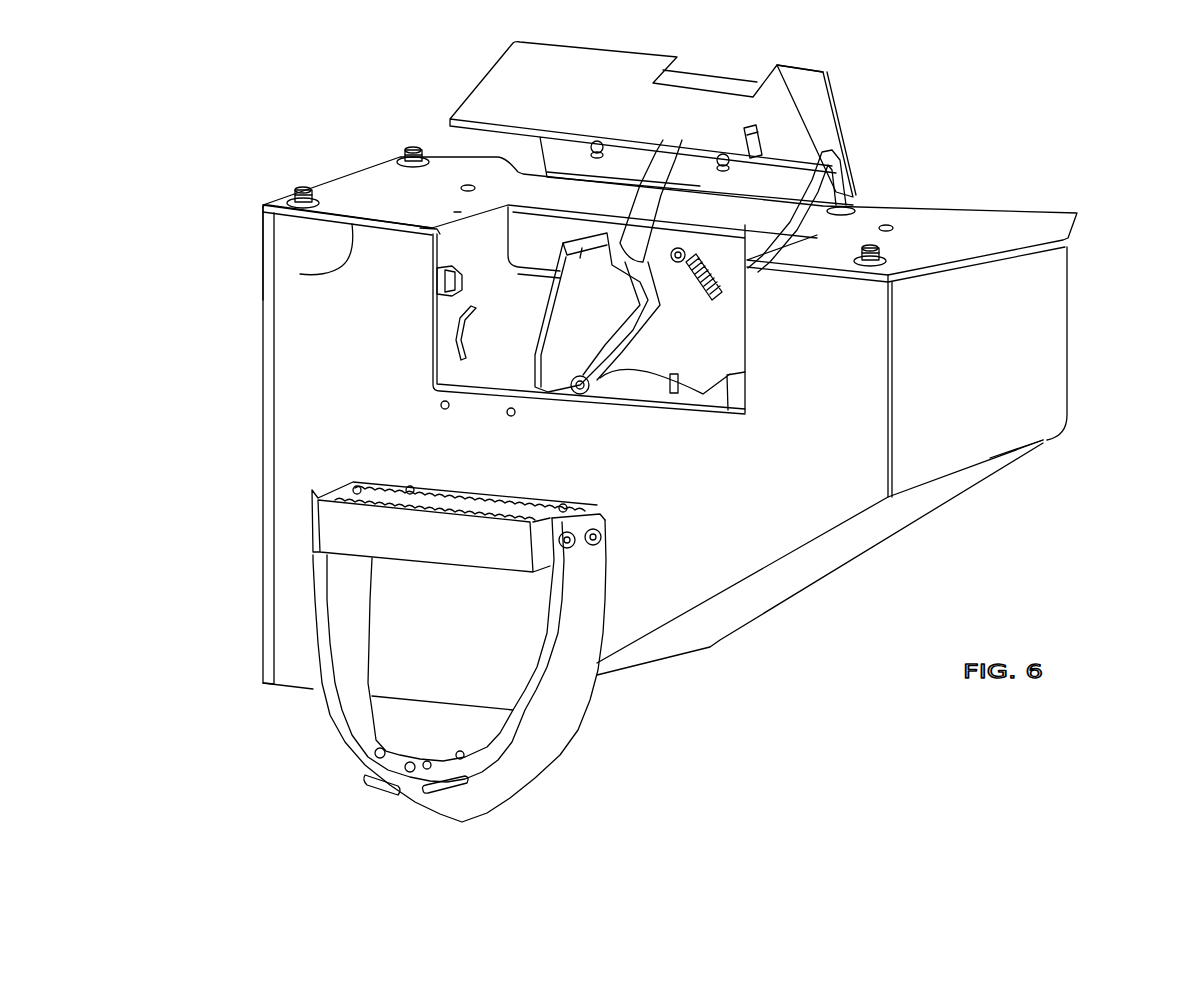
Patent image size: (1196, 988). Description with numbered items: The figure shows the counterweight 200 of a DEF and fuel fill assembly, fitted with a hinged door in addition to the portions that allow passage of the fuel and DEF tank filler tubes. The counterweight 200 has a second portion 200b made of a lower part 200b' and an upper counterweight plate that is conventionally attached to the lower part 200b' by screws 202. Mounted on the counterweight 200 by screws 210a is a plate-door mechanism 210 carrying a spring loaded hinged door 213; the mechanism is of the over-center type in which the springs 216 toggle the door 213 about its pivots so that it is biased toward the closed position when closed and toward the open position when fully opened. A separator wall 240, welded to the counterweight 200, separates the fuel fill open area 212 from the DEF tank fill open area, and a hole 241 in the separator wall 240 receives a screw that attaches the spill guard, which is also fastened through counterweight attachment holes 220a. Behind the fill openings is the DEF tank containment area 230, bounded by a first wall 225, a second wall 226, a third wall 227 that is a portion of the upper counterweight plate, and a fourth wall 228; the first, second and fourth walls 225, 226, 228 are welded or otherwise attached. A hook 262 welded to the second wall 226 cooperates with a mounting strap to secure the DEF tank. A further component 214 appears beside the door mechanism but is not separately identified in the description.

The counterweight 200 is at (994, 116).
The second portion 200b is at (880, 493).
The lower part 200b' is at (1022, 366).
The screws 202 is at (303, 188).
The plate-door mechanism 210 is at (460, 73).
The screws 210a is at (677, 248).
The fuel fill open area 212 is at (653, 378).
The hinged door 213 is at (791, 97).
The lid flange 214 is at (840, 118).
The springs 216 is at (742, 290).
The counterweight attachment holes 220a is at (511, 416).
The first wall 225 is at (297, 323).
The second wall 226 is at (462, 302).
The third wall 227 is at (322, 272).
The fourth wall 228 is at (257, 232).
The DEF tank containment area 230 is at (450, 378).
The separator wall 240 is at (573, 318).
The hole 241 is at (558, 262).
The hook 262 is at (458, 332).